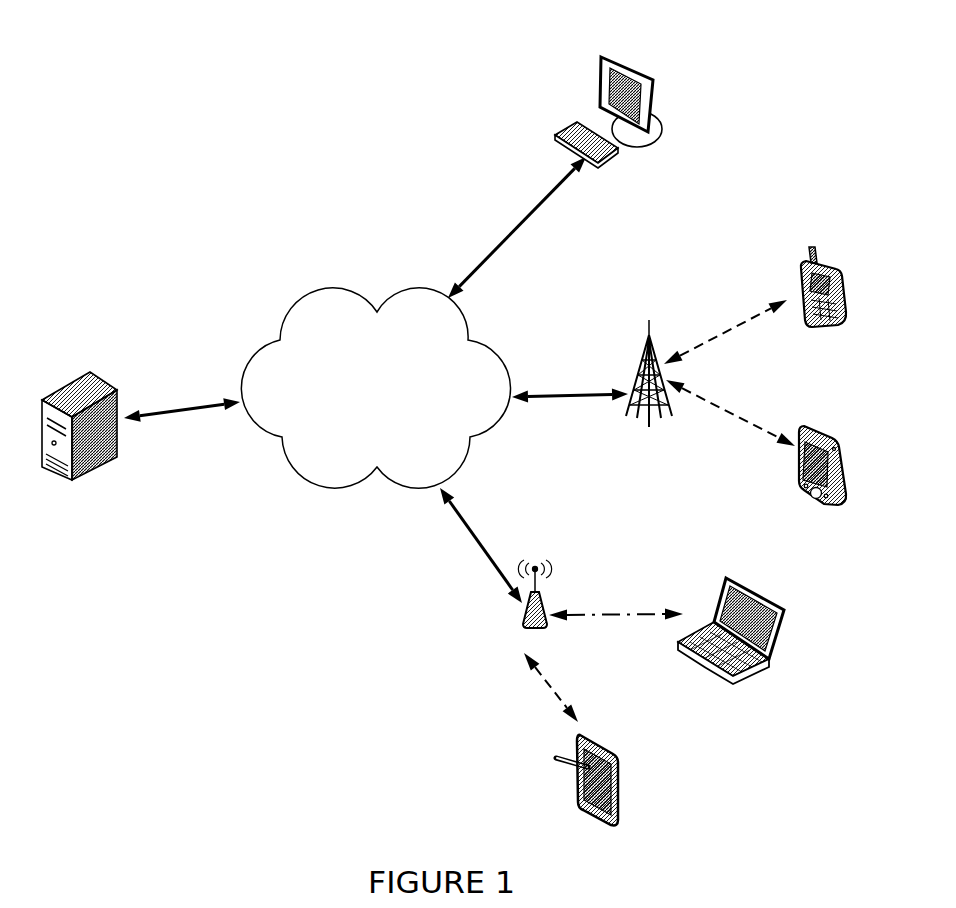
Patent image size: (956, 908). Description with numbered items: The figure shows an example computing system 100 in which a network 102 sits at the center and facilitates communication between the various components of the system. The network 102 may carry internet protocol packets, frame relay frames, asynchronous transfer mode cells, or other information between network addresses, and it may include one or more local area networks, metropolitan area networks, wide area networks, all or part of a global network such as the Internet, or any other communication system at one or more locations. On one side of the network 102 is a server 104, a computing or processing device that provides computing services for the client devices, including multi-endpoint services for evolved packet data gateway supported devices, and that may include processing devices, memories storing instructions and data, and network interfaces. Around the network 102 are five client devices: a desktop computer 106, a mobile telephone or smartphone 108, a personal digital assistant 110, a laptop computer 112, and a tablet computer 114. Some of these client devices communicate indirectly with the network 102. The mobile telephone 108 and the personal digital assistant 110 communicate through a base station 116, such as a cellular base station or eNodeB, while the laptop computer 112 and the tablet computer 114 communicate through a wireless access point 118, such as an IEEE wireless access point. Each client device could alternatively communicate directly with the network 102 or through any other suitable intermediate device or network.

The computing system 100 is at (201, 145).
The network 102 is at (289, 294).
The server 104 is at (62, 388).
The desktop computer 106 is at (600, 62).
The mobile telephone or smartphone 108 is at (842, 272).
The personal digital assistant 110 is at (837, 438).
The laptop computer 112 is at (783, 622).
The tablet computer 114 is at (625, 773).
The base station 116 is at (673, 415).
The wireless access point 118 is at (547, 603).